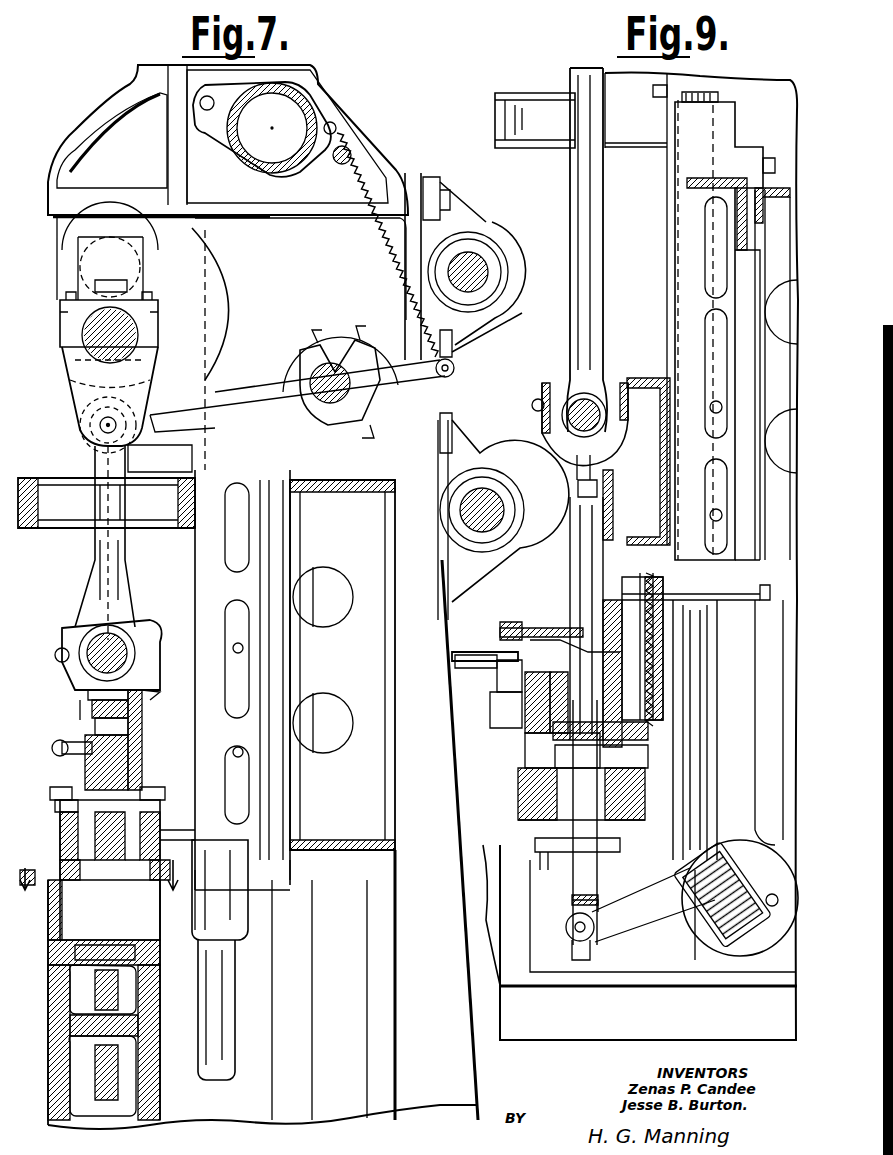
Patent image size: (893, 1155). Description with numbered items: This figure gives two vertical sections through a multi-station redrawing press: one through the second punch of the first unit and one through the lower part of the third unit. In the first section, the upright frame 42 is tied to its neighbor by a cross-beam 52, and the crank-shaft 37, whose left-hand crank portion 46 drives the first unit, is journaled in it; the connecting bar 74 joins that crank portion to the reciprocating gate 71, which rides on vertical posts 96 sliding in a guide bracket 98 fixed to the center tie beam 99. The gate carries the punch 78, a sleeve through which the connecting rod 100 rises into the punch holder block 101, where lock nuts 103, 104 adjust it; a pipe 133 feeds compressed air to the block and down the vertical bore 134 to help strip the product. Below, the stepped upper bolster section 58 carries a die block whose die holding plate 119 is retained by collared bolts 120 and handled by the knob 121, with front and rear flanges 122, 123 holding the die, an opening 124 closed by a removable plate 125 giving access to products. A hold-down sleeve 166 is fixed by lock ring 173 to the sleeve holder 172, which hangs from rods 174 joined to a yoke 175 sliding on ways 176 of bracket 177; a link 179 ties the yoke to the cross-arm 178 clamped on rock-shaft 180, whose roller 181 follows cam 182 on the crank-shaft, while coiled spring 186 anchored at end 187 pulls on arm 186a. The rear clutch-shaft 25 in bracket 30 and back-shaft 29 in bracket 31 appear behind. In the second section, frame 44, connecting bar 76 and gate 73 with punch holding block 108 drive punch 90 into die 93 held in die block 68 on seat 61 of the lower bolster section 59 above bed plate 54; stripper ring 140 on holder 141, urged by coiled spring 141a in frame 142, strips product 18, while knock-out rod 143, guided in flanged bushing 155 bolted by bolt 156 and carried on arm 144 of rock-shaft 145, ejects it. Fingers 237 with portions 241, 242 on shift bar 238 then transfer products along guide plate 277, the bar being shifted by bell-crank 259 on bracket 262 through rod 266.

In FIG. 7, the frame 42 is at (92, 128).
In FIG. 7, the cross-beam 52 is at (316, 102).
In FIG. 7, the spring end 187 is at (337, 128).
In FIG. 7, the coiled spring 186 is at (392, 258).
In FIG. 7, the arm 186a is at (438, 389).
In FIG. 7, the left-hand crank portion 46 is at (95, 268).
In FIG. 7, the crank-shaft 37 is at (95, 338).
In FIG. 7, the roller 181 is at (82, 410).
In FIG. 7, the link 179 is at (98, 428).
In FIG. 7, the cam 182 is at (218, 313).
In FIG. 7, the cross-arm 178 is at (172, 410).
In FIG. 7, the rock-shaft 180 is at (333, 346).
In FIG. 7, the bracket 177 is at (145, 462).
In FIG. 9, the bracket 177 is at (646, 128).
In FIG. 7, the yoke 175 is at (68, 540).
In FIG. 7, the ways 176 is at (125, 530).
In FIG. 7, the rod 174 is at (120, 562).
In FIG. 7, the connecting bar 74 is at (96, 575).
In FIG. 7, the gate 71 is at (70, 638).
In FIG. 7, the punch holder block 101 is at (88, 700).
In FIG. 7, the pipe 133 is at (88, 718).
In FIG. 7, the lock nut 104 is at (128, 708).
In FIG. 7, the connecting rod 100 is at (128, 727).
In FIG. 7, the lock nut 103 is at (140, 748).
In FIG. 7, the vertical bore 134 is at (92, 757).
In FIG. 7, the front flange 122 is at (58, 790).
In FIG. 7, the sleeve holder 172 is at (60, 802).
In FIG. 7, the collared bolt 120 is at (62, 806).
In FIG. 7, the rear flange 123 is at (178, 792).
In FIG. 7, the product 18 is at (99, 861).
In FIG. 7, the sleeve 166 is at (185, 858).
In FIG. 7, the lock ring 173 is at (140, 840).
In FIG. 7, the punch 78 is at (97, 897).
In FIG. 7, the guide bracket 98 is at (213, 893).
In FIG. 9, the guide bracket 98 is at (703, 290).
In FIG. 7, the post 96 is at (222, 1003).
In FIG. 9, the post 96 is at (702, 710).
In FIG. 7, the handle 121 is at (48, 883).
In FIG. 7, the die holding plate 119 is at (62, 895).
In FIG. 7, the removable plate 125 is at (52, 950).
In FIG. 7, the opening 124 is at (56, 962).
In FIG. 7, the upper bolster section 58 is at (52, 1046).
In FIG. 7, the center tie beam 99 is at (372, 770).
In FIG. 9, the center tie beam 99 is at (775, 282).
In FIG. 7, the rod 266 is at (470, 656).
In FIG. 7, the back-shaft 29 is at (482, 262).
In FIG. 7, the bracket 31 is at (492, 312).
In FIG. 7, the bracket 30 is at (478, 466).
In FIG. 7, the clutch-shaft 25 is at (490, 500).
In FIG. 9, the frame 44 is at (740, 95).
In FIG. 9, the connecting bar 76 is at (594, 237).
In FIG. 9, the gate 73 is at (618, 446).
In FIG. 9, the punch holding block 108 is at (590, 527).
In FIG. 9, the holder 141 is at (640, 578).
In FIG. 9, the stripper ring 140 is at (617, 627).
In FIG. 9, the product-embracing finger 237 is at (560, 628).
In FIG. 9, the finger portion 241 is at (520, 621).
In FIG. 9, the shift bar 238 is at (500, 633).
In FIG. 9, the guide plate 277 is at (663, 640).
In FIG. 9, the frame 142 is at (665, 625).
In FIG. 9, the coiled spring 141a is at (640, 700).
In FIG. 9, the bell-crank 259 is at (500, 670).
In FIG. 9, the finger portion 242 is at (525, 693).
In FIG. 9, the bracket 262 is at (500, 713).
In FIG. 9, the punch 90 is at (537, 733).
In FIG. 9, the die 93 is at (527, 748).
In FIG. 9, the lower bolster section 59 is at (525, 767).
In FIG. 9, the knock-out rod 143 is at (583, 790).
In FIG. 9, the flanged bushing 155 is at (580, 808).
In FIG. 9, the die block 68 is at (645, 730).
In FIG. 9, the die block seat 61 is at (647, 760).
In FIG. 9, the bed plate 54 is at (620, 805).
In FIG. 9, the bolt 156 is at (542, 845).
In FIG. 9, the arm 144 is at (612, 927).
In FIG. 9, the rock-shaft 145 is at (700, 962).